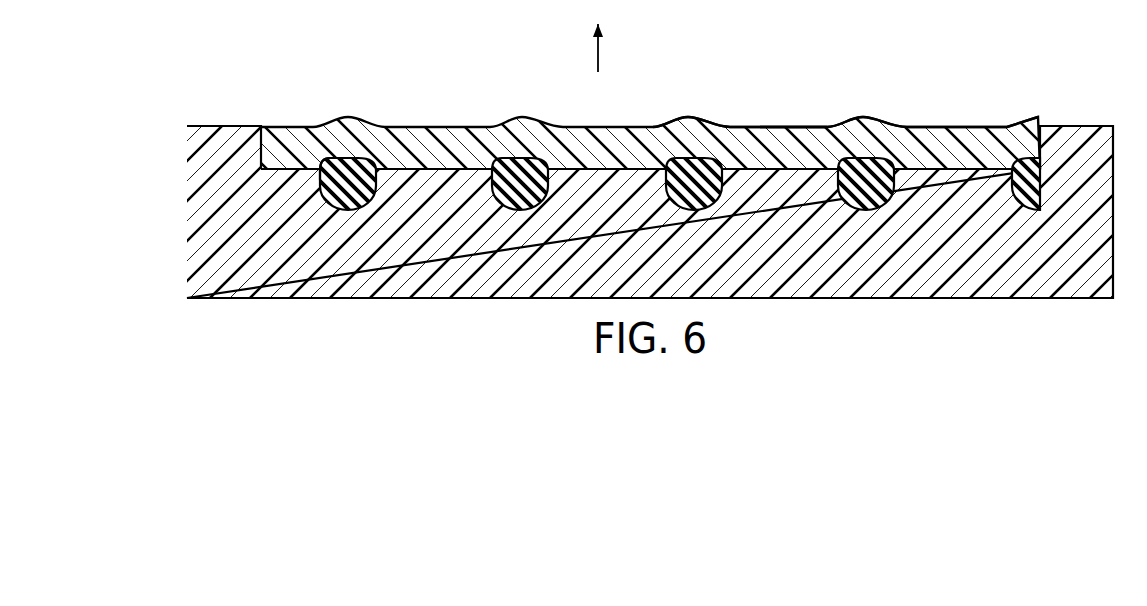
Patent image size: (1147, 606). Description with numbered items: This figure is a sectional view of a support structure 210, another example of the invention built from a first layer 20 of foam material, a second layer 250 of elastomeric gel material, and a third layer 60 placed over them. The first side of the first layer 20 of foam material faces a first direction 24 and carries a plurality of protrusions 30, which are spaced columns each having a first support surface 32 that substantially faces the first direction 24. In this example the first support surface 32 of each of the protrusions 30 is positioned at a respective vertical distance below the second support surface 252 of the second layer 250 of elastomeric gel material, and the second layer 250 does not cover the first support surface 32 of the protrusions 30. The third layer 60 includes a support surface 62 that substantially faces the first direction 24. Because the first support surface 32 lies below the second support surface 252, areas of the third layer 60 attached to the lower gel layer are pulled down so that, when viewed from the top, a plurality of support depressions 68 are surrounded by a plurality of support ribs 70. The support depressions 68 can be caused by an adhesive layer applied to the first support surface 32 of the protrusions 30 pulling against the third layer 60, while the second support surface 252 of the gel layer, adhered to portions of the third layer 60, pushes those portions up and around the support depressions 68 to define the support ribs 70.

The first layer of foam material 20 is at (146, 227).
The first direction 24 is at (598, 47).
The protrusions 30 is at (463, 167).
The first support surface 32 is at (426, 152).
The third layer 60 is at (662, 126).
The support surface 62 is at (740, 112).
The support depressions 68 is at (782, 126).
The support ribs 70 is at (866, 117).
The support structure 210 is at (897, 80).
The second layer of elastomeric gel material 250 is at (348, 158).
The second support surface 252 is at (323, 146).